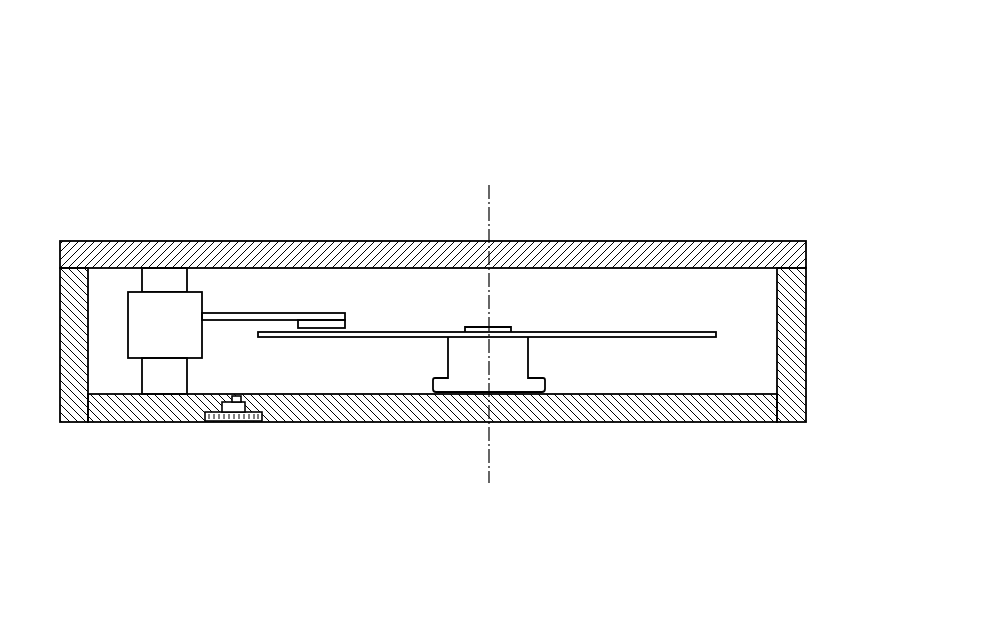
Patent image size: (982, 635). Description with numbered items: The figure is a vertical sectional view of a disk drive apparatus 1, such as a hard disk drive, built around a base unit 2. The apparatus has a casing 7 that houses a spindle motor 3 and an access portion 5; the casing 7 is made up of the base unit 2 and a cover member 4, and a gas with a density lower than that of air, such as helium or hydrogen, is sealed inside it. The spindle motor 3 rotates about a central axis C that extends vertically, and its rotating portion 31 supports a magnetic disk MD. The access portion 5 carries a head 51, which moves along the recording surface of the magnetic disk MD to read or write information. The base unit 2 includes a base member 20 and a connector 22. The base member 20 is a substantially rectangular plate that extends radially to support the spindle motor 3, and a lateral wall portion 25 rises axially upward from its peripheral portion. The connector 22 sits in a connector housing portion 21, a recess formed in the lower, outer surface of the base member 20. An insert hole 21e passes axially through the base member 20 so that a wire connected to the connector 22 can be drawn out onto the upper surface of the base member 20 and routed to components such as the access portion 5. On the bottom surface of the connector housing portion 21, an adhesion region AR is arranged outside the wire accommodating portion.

The disk drive apparatus 1 is at (723, 88).
The base unit 2 is at (568, 428).
The base member 20 is at (360, 421).
The connector housing portion 21 is at (261, 426).
The insert hole 21e is at (236, 396).
The connector 22 is at (238, 423).
The lateral wall portion 25 is at (806, 312).
The spindle motor 3 is at (508, 325).
The rotating portion 31 is at (534, 358).
The cover member 4 is at (390, 241).
The access portion 5 is at (292, 307).
The head 51 is at (345, 325).
The casing 7 is at (810, 262).
The central axis C is at (489, 225).
The magnetic disk MD is at (663, 331).
The adhesion region AR is at (211, 423).